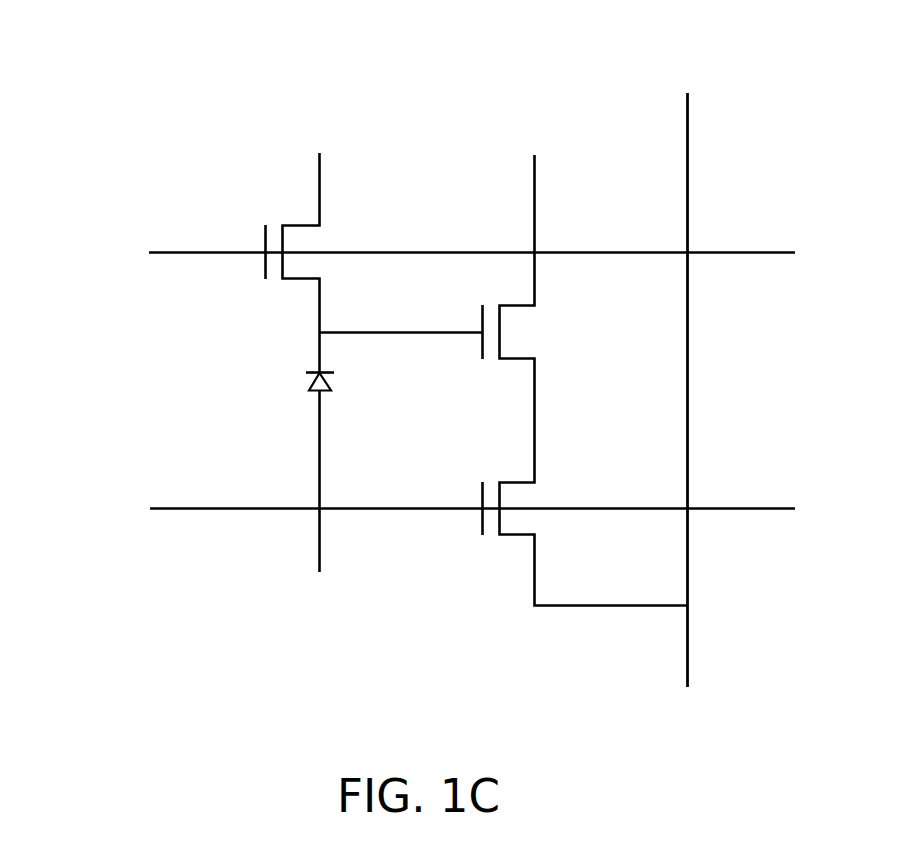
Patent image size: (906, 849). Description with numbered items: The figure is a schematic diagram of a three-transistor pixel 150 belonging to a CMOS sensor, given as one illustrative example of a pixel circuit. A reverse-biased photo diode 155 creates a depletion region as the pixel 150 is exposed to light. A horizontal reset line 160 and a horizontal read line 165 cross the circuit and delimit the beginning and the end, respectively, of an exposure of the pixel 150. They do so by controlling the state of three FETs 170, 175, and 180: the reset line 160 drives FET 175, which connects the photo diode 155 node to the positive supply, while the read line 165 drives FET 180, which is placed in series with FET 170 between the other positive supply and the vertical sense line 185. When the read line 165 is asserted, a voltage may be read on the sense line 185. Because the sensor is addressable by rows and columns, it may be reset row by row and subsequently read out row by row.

The three-transistor pixel 150 is at (427, 141).
The photo diode 155 is at (330, 386).
The reset line 160 is at (222, 250).
The read line 165 is at (222, 506).
The FET 170 is at (525, 318).
The FET 175 is at (308, 237).
The FET 180 is at (522, 495).
The sense line 185 is at (689, 663).